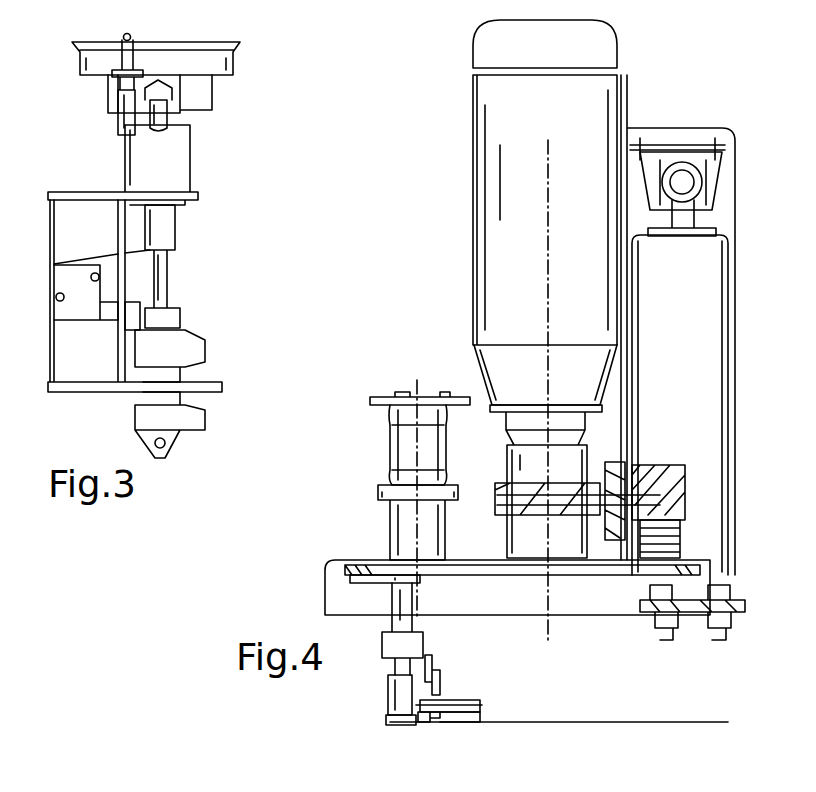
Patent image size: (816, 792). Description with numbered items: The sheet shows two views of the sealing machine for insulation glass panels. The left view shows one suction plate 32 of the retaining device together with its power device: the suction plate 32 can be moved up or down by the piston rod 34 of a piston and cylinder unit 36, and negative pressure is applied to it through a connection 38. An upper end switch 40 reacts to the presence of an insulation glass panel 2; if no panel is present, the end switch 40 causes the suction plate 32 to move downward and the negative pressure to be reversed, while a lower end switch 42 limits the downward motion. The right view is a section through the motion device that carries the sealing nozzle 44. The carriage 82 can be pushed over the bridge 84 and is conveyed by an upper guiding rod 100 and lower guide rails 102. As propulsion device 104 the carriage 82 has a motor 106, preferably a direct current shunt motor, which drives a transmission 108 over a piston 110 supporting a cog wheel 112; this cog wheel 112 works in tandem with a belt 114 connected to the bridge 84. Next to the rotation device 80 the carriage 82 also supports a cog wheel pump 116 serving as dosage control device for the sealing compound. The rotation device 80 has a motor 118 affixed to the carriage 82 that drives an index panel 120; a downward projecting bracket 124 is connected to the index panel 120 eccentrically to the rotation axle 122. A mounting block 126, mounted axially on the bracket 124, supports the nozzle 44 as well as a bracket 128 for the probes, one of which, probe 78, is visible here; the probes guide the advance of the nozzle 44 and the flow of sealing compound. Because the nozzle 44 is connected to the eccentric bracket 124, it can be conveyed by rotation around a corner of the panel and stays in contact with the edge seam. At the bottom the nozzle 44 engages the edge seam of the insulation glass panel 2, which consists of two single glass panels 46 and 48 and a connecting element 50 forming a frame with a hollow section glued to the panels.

In FIG. 4, the insulation glass panel 2 is at (490, 704).
In FIG. 3, the suction plate 32 is at (223, 95).
In FIG. 3, the piston rod 34 is at (166, 280).
In FIG. 3, the piston and cylinder unit 36 is at (190, 346).
In FIG. 3, the connection 38 is at (155, 130).
In FIG. 3, the upper end switch 40 is at (134, 63).
In FIG. 3, the lower end switch 42 is at (70, 306).
In FIG. 4, the nozzle 44 is at (400, 728).
In FIG. 4, the single glass panel 46 is at (476, 704).
In FIG. 4, the single glass panel 48 is at (462, 722).
In FIG. 4, the connecting element 50 is at (425, 726).
In FIG. 4, the probe 78 is at (440, 686).
In FIG. 4, the rotation device 80 is at (382, 452).
In FIG. 4, the carriage 82 is at (658, 110).
In FIG. 4, the bridge 84 is at (730, 320).
In FIG. 4, the upper guiding rod 100 is at (690, 176).
In FIG. 4, the lower guide rails 102 is at (690, 625).
In FIG. 4, the propulsion device 104 is at (449, 196).
In FIG. 4, the motor 106 is at (492, 301).
In FIG. 4, the transmission 108 is at (515, 452).
In FIG. 4, the piston 110 is at (668, 465).
In FIG. 4, the cog wheel 112 is at (655, 450).
In FIG. 4, the belt 114 is at (680, 548).
In FIG. 4, the cog wheel pump 116 is at (475, 520).
In FIG. 4, the motor 118 is at (395, 428).
In FIG. 4, the index panel 120 is at (345, 583).
In FIG. 4, the rotation axle 122 is at (460, 598).
In FIG. 4, the bracket 124 is at (395, 606).
In FIG. 4, the mounting block 126 is at (395, 694).
In FIG. 4, the bracket 128 is at (430, 660).